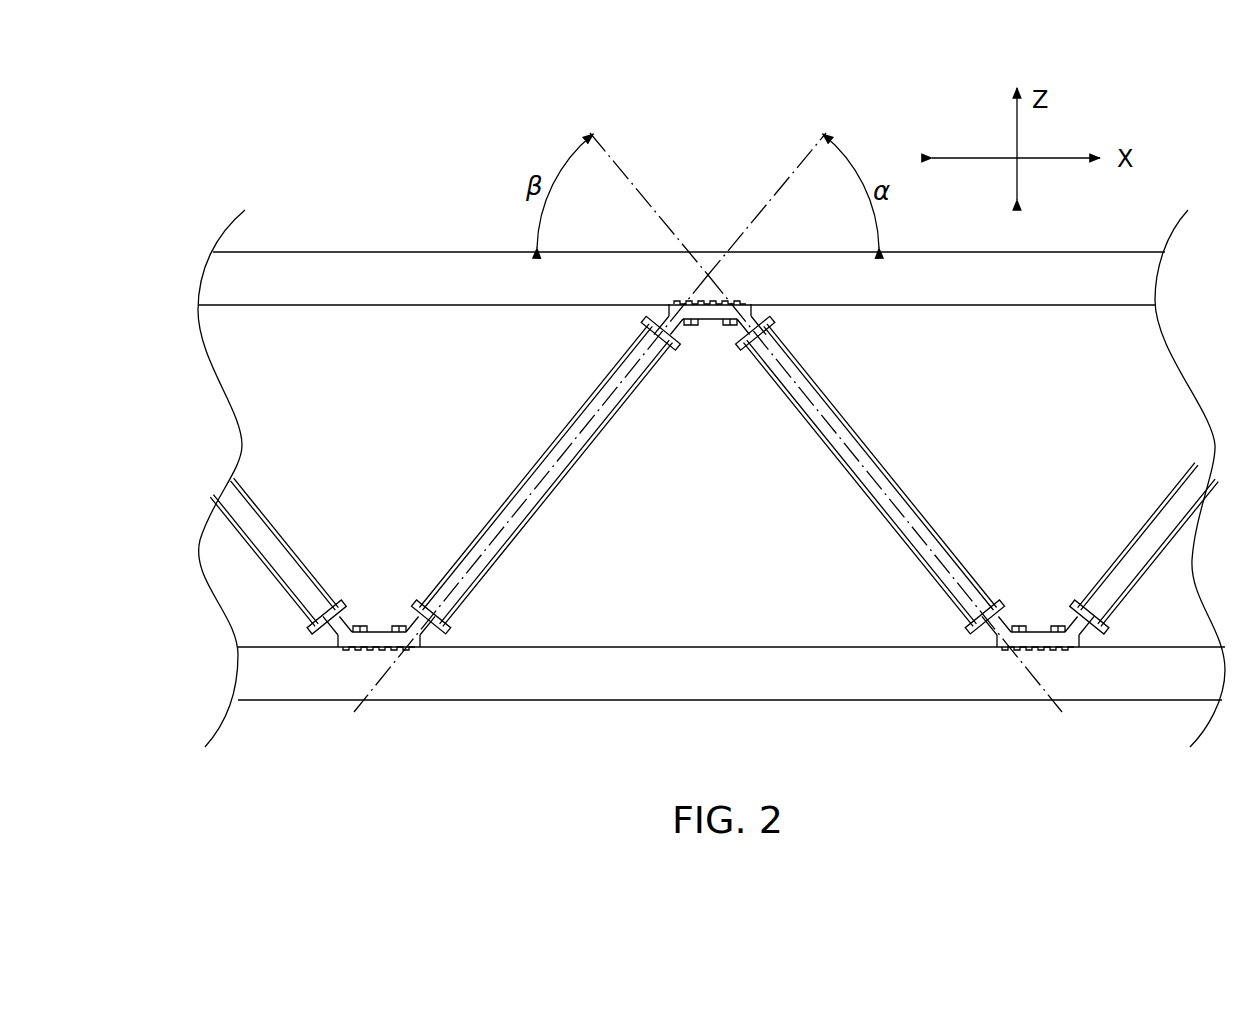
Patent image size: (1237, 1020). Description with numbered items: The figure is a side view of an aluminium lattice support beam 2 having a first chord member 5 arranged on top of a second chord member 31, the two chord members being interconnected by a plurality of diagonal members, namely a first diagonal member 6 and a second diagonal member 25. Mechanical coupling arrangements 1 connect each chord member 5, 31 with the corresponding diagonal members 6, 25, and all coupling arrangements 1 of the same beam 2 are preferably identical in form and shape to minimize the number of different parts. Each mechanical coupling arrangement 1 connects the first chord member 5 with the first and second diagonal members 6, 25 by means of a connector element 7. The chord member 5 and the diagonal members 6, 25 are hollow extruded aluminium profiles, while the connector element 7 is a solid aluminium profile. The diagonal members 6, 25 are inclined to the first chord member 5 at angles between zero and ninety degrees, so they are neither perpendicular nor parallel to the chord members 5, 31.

The lattice support beam 2 is at (292, 110).
The first chord member 5 is at (423, 278).
The second chord member 31 is at (750, 680).
The first diagonal member 6 is at (532, 482).
The second diagonal member 25 is at (848, 442).
The mechanical coupling arrangement 1 is at (700, 345).
The connector element 7 is at (722, 323).